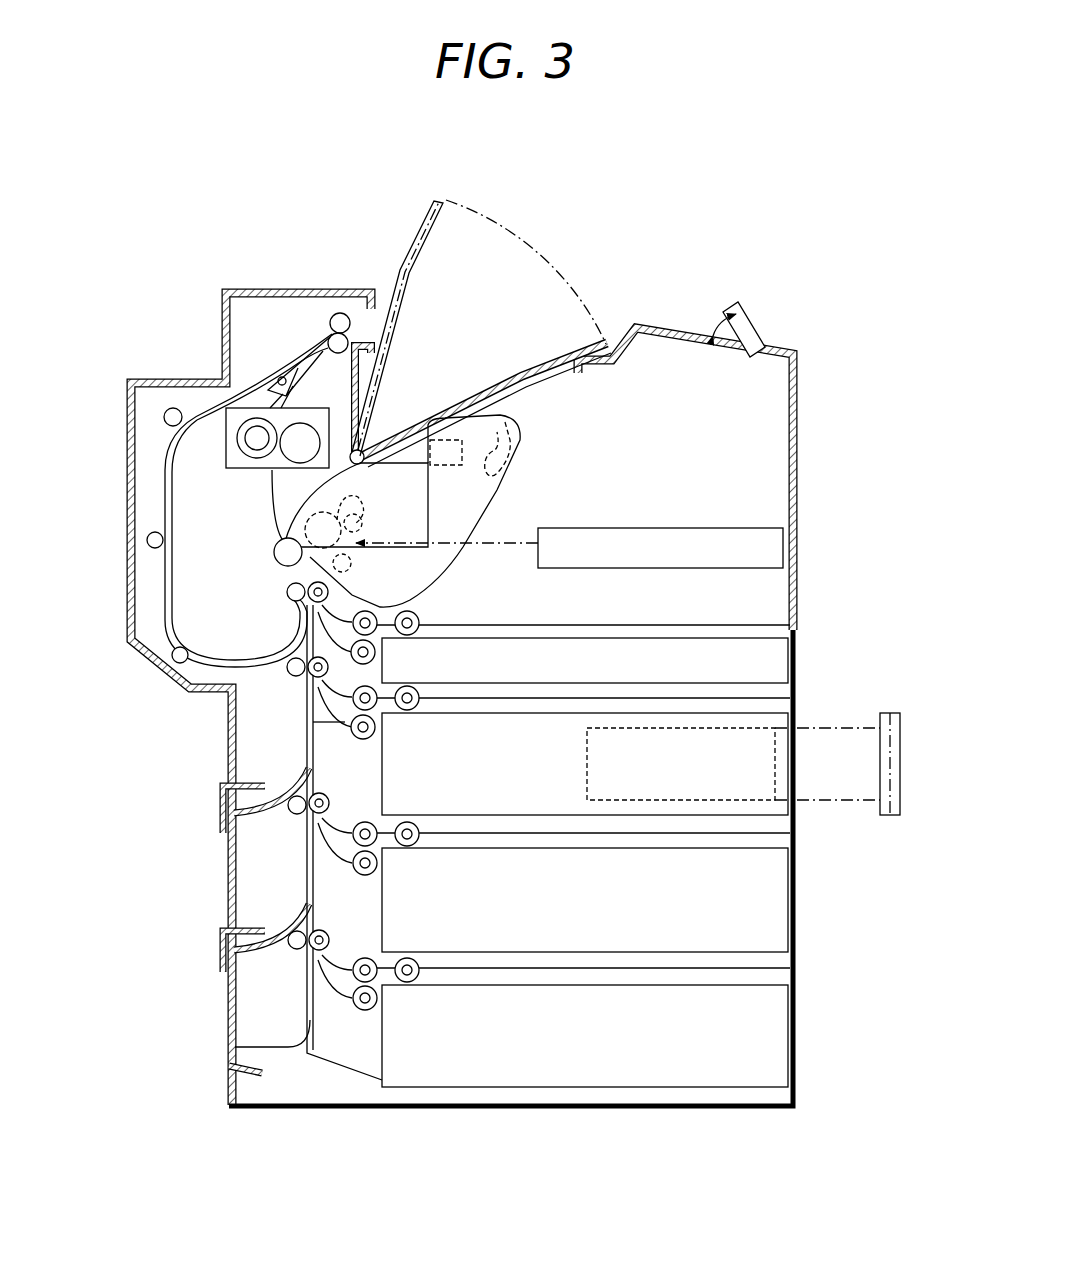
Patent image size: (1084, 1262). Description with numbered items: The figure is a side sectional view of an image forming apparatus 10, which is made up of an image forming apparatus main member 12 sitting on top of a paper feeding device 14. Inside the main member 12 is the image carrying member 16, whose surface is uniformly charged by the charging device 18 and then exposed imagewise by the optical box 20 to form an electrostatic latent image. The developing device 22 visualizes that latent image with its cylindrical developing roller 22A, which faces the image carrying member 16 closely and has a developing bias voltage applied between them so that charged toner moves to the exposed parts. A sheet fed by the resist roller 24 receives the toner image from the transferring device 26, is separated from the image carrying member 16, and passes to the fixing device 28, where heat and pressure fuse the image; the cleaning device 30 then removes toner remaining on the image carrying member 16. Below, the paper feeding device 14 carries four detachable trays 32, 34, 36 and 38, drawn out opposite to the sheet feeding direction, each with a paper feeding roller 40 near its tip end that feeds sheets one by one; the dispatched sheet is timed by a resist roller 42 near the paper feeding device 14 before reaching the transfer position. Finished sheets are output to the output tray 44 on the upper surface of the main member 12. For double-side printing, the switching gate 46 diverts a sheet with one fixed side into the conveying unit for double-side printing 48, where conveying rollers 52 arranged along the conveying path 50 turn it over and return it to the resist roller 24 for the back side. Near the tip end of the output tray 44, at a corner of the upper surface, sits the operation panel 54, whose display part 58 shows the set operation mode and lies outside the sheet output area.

The image forming apparatus 10 is at (762, 254).
The image forming apparatus main member 12 is at (797, 492).
The paper feeding device 14 is at (798, 916).
The image carrying member 16 is at (305, 530).
The charging device 18 is at (364, 522).
The optical box 20 is at (652, 548).
The developing device 22 is at (425, 597).
The developing roller 22A is at (352, 562).
The resist roller 24 is at (290, 600).
The transferring device 26 is at (280, 558).
The fixing device 28 is at (245, 466).
The cleaning device 30 is at (360, 498).
The tray 32 is at (770, 665).
The tray 34 is at (790, 757).
The tray 36 is at (770, 880).
The tray 38 is at (770, 1040).
The paper feeding roller 40 is at (415, 630).
The resist roller 42 is at (350, 655).
The output tray 44 is at (468, 393).
The switching gate 46 is at (277, 353).
The conveying unit for double-side printing 48 is at (175, 370).
The conveying path 50 is at (165, 500).
The conveying roller 52 is at (164, 418).
The operation panel 54 is at (792, 360).
The display part 58 is at (745, 316).